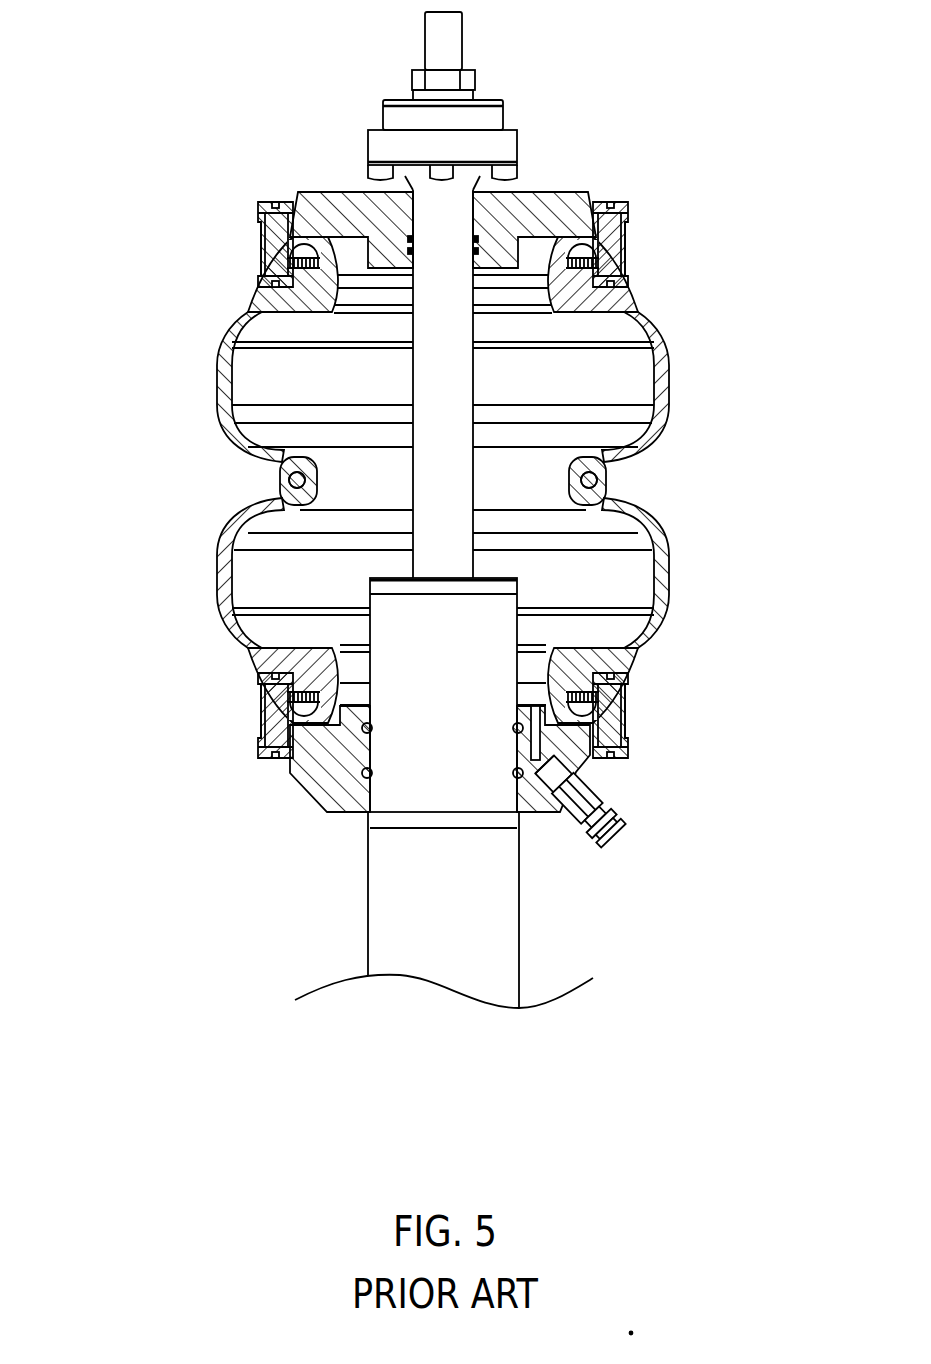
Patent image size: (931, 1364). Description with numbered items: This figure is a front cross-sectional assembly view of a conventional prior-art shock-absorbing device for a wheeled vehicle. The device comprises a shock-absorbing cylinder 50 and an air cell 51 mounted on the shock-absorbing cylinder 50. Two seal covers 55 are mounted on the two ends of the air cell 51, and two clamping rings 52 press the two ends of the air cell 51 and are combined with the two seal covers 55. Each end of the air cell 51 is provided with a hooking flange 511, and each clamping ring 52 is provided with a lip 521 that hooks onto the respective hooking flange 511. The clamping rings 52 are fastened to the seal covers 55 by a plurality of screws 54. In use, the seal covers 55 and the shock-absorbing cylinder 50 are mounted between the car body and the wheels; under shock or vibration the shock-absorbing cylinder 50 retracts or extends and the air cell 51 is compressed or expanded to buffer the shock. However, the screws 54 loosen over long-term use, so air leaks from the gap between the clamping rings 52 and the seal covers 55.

The shock-absorbing cylinder 50 is at (480, 893).
The air cell 51 is at (220, 405).
The hooking flange 511 is at (262, 243).
The clamping ring 52 is at (623, 252).
The lip 521 is at (300, 248).
The screw 54 is at (612, 204).
The seal cover 55 is at (550, 197).